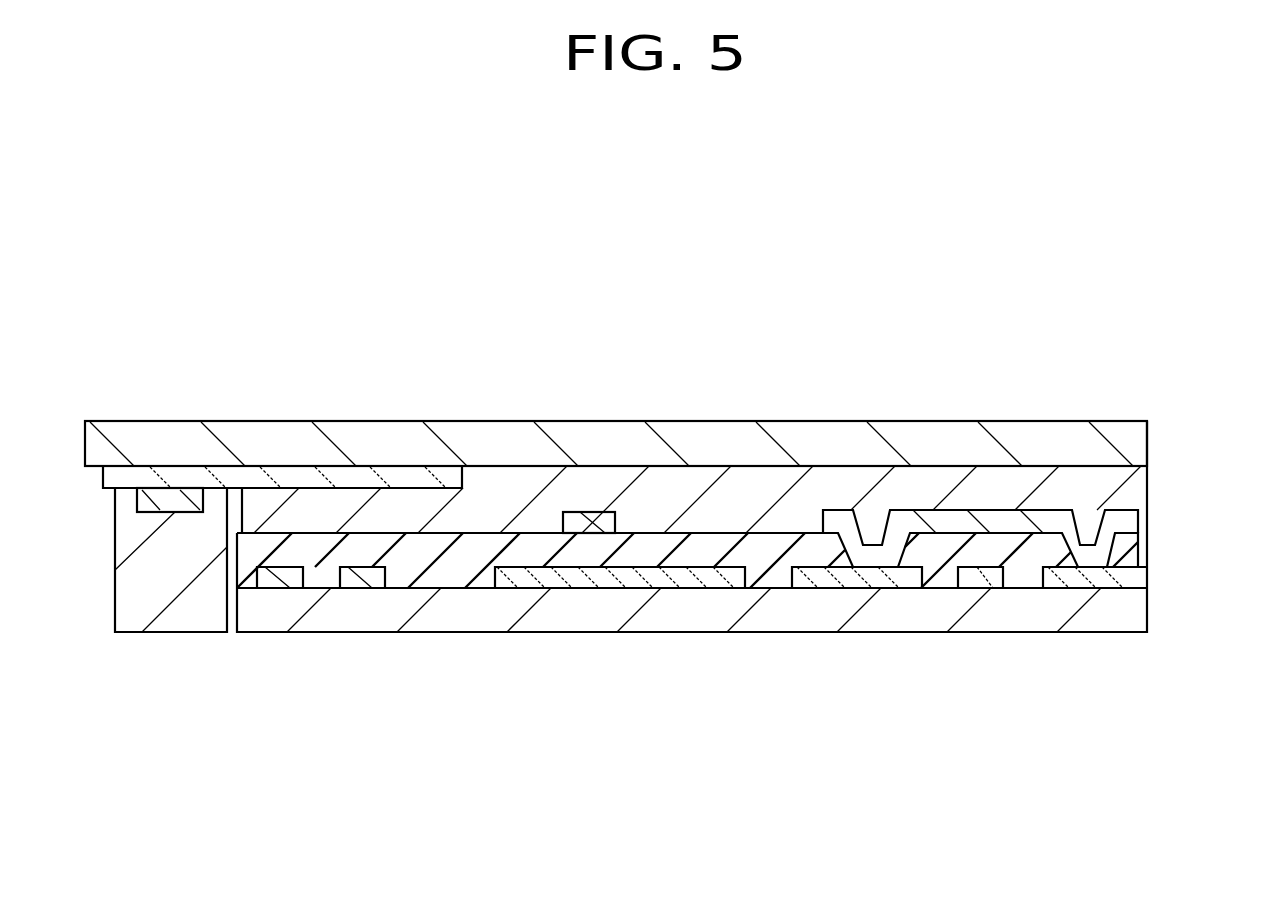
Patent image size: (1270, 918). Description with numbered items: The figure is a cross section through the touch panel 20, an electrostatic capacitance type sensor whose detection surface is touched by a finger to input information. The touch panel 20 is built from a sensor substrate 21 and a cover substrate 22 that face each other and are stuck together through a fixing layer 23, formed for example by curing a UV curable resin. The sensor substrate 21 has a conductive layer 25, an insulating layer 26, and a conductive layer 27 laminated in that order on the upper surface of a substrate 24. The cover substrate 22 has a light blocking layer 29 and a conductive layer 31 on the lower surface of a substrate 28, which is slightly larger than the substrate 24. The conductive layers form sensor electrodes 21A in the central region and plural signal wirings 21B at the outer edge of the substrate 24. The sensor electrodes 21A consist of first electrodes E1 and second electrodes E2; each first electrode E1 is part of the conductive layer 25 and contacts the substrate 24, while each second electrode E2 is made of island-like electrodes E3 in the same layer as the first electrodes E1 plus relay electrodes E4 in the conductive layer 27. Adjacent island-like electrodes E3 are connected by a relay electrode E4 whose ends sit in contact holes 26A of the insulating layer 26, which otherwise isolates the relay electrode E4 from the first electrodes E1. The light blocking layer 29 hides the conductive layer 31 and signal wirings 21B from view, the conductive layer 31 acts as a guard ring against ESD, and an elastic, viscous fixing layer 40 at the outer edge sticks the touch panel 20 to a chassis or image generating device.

The touch panel 20 is at (1172, 299).
The sensor substrate 21 is at (1213, 512).
The sensor electrodes 21A is at (1010, 262).
The signal wirings 21B is at (372, 573).
The cover substrate 22 is at (1213, 422).
The fixing layer 23 is at (1138, 488).
The substrate 24 is at (1138, 610).
The conductive layer 25 is at (1138, 575).
The insulating layer 26 is at (1138, 550).
The contact holes 26A is at (853, 521).
The conductive layer 27 is at (1128, 520).
The substrate 28 is at (1128, 443).
The light blocking layer 29 is at (283, 476).
The conductive layer 31 is at (180, 502).
The fixing layer 40 is at (172, 618).
The first electrode E1 is at (680, 580).
The second electrode E2 is at (1048, 342).
The island-like electrode E3 is at (884, 585).
The relay electrode E4 is at (975, 558).